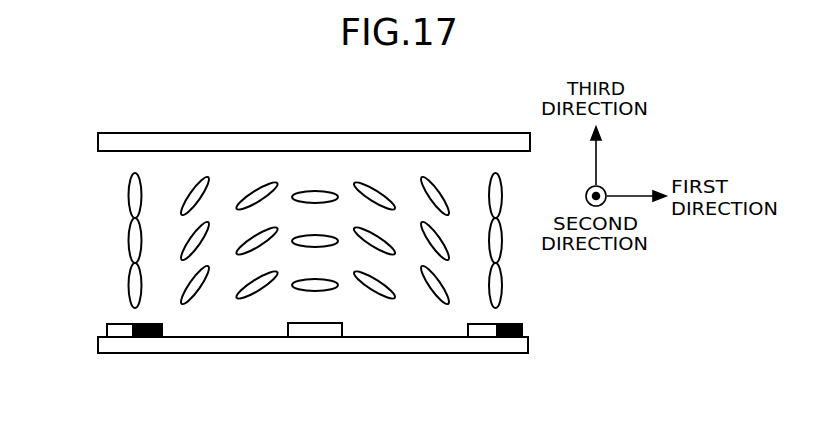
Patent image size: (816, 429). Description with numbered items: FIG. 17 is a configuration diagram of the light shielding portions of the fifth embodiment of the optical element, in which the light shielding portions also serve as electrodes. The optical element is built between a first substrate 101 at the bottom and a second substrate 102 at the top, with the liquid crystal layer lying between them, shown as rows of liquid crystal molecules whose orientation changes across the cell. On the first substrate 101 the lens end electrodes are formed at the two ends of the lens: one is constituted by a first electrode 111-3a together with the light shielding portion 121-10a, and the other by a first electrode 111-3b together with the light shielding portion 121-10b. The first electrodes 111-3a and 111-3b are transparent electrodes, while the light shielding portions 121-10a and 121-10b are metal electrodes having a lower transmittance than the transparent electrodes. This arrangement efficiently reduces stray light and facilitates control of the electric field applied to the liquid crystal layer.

The second substrate 102 is at (98, 138).
The first substrate 101 is at (98, 342).
The first electrode 111-3a is at (107, 331).
The light shielding portion 121-10a is at (163, 334).
The first electrode 111-3b is at (468, 334).
The light shielding portion 121-10b is at (523, 331).